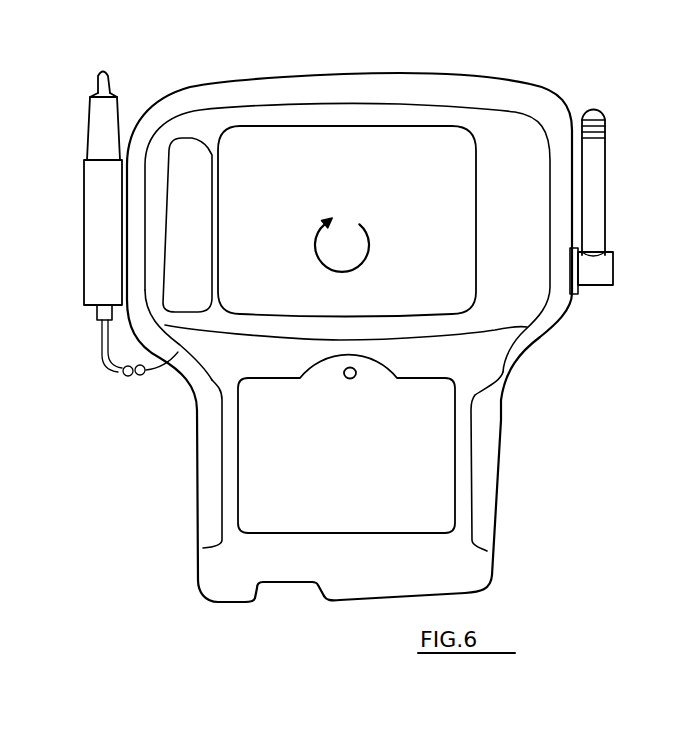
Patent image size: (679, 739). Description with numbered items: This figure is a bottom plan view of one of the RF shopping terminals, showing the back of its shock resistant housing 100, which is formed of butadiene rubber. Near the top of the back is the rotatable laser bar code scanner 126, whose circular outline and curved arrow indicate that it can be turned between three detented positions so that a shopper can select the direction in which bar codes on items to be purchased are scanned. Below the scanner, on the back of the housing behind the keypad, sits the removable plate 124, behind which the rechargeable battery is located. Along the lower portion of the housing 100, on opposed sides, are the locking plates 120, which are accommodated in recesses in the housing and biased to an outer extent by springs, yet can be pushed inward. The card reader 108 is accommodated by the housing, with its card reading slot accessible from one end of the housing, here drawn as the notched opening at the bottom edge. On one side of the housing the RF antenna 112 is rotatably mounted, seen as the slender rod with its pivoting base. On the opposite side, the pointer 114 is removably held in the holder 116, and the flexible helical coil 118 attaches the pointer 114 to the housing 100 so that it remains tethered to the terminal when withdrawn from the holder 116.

The shock resistant housing 100 is at (508, 95).
The card reader 108 is at (323, 603).
The RF antenna 112 is at (602, 162).
The pointer 114 is at (90, 128).
The holder 116 is at (85, 235).
The flexible helical coil 118 is at (112, 375).
The locking plates 120 is at (208, 465).
The removable plate 124 is at (435, 455).
The rotatable laser bar code scanner 126 is at (434, 205).